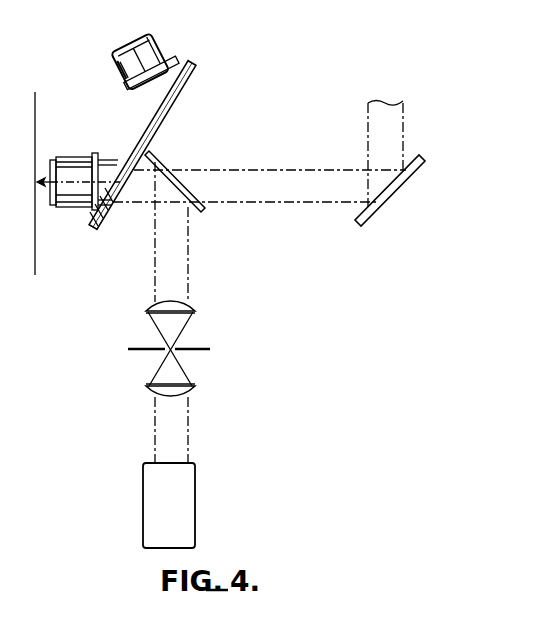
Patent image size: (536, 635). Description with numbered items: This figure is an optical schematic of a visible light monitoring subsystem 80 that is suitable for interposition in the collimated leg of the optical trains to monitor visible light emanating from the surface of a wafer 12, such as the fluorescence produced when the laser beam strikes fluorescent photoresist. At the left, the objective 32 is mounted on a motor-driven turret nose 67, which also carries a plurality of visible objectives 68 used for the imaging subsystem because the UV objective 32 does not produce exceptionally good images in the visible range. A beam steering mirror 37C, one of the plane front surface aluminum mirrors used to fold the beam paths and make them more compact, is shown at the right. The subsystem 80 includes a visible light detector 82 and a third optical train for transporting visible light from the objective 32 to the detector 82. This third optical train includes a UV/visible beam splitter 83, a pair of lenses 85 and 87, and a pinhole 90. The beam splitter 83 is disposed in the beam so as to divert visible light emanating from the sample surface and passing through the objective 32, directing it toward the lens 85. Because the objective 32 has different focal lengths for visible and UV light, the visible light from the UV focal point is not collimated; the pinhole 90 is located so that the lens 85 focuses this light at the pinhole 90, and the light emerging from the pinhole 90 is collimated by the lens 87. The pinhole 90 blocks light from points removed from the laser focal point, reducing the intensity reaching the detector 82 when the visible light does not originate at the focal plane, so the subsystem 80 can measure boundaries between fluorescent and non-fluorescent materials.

The wafer 12 is at (35, 101).
The objective 32 is at (66, 157).
The turret nose 67 is at (148, 143).
The visible objectives 68 is at (158, 48).
The UV/visible beam splitter 83 is at (202, 215).
The beam steering mirror 37C is at (422, 164).
The lens 85 is at (193, 310).
The pinhole 90 is at (200, 349).
The lens 87 is at (190, 387).
The visible light detector 82 is at (191, 505).
The visible light monitoring subsystem 80 is at (292, 389).